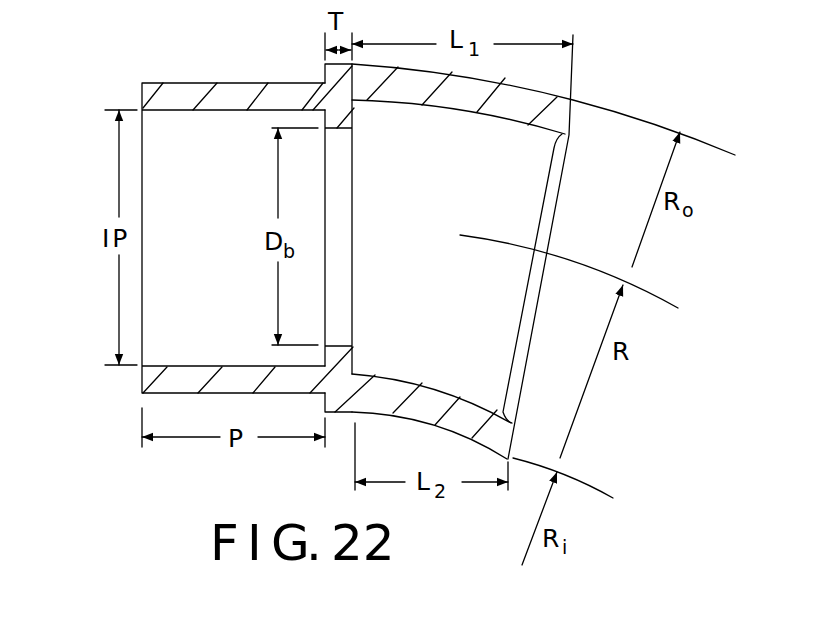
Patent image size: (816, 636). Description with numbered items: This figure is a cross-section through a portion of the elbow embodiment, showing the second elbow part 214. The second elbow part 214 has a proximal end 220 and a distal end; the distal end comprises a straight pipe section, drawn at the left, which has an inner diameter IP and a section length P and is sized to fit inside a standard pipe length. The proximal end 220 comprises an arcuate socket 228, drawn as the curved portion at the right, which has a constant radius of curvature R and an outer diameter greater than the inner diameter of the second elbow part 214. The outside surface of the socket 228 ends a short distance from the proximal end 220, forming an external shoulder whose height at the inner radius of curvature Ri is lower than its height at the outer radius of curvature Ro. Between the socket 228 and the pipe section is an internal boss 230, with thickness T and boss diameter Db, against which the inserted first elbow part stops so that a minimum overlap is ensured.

The second elbow part 214 is at (92, 348).
The proximal end 220 is at (503, 437).
The arcuate socket 228 is at (513, 157).
The internal boss 230 is at (337, 120).